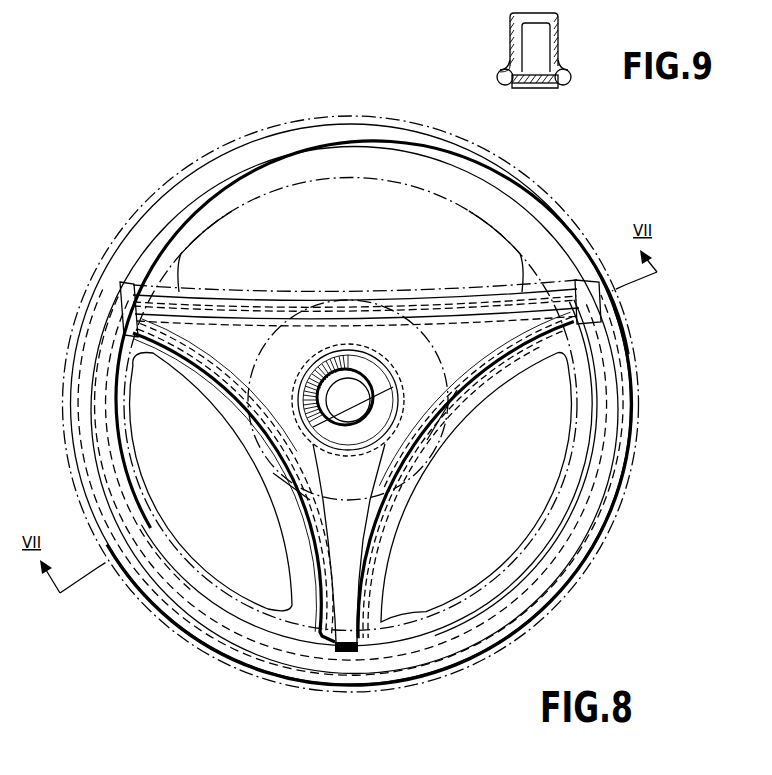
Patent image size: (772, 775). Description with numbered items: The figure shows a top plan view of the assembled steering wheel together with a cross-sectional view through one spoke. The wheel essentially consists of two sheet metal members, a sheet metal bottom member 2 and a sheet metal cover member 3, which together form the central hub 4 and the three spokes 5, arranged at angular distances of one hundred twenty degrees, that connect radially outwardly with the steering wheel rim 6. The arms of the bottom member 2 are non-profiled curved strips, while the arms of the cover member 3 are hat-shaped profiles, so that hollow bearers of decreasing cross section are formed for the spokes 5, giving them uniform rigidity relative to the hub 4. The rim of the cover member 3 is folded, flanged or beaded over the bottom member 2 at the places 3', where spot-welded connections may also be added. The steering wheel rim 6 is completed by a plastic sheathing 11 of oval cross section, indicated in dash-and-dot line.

In FIG. 8, the sheathing 11 is at (127, 224).
In FIG. 8, the steering wheel rim 6 is at (638, 418).
In FIG. 8, the spokes 5 is at (220, 331).
In FIG. 9, the spokes 5 is at (510, 36).
In FIG. 8, the hub 4 is at (408, 423).
In FIG. 9, the sheet metal cover member 3 is at (551, 41).
In FIG. 9, the beaded-over places 3' is at (532, 72).
In FIG. 9, the sheet metal bottom member 2 is at (537, 88).